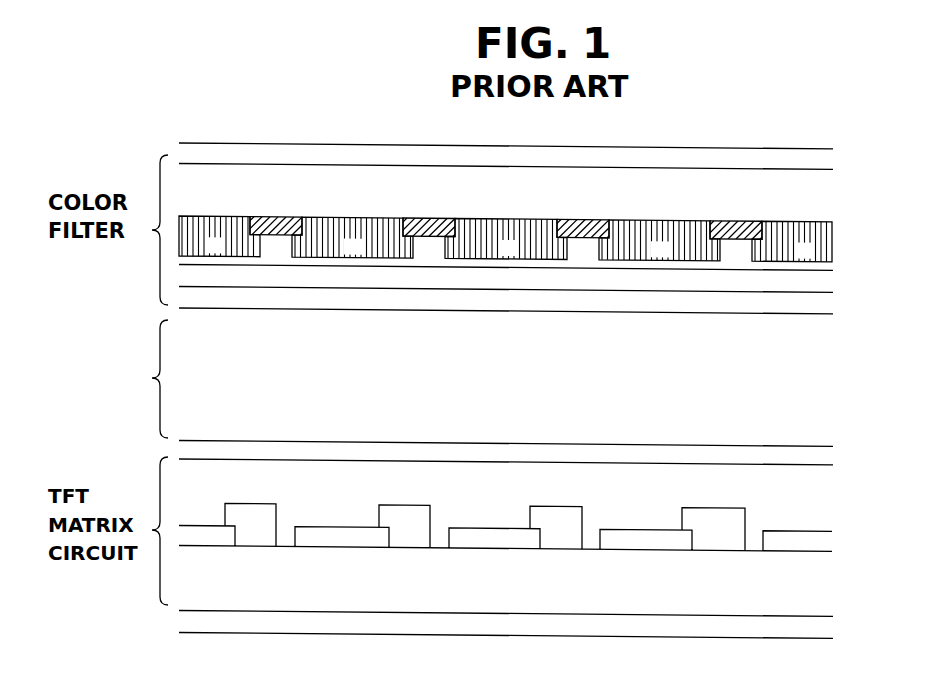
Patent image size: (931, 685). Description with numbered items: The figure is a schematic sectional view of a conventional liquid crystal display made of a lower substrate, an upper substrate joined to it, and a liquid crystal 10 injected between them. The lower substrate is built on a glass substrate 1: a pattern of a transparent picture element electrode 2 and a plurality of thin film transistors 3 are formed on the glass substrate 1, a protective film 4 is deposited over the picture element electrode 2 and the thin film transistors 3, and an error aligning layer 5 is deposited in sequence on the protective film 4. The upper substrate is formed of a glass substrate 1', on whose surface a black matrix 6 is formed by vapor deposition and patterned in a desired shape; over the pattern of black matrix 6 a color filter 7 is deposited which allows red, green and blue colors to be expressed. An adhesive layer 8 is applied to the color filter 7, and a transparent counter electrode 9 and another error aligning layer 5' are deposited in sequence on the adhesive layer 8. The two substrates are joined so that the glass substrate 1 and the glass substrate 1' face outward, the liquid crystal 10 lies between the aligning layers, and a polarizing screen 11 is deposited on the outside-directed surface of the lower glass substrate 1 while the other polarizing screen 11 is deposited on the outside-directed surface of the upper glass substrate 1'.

The polarizing screen 11 is at (823, 164).
The glass substrate 1' is at (535, 178).
The black matrix 6 is at (748, 222).
The color filter 7 is at (831, 246).
The adhesive layer 8 is at (820, 268).
The transparent counter electrode 9 is at (820, 287).
The error aligning layer 5' is at (532, 322).
The liquid crystal 10 is at (808, 380).
The error aligning layer 5 is at (528, 438).
The protective film 4 is at (818, 478).
The thin film transistor 3 is at (745, 508).
The transparent picture element electrode 2 is at (814, 543).
The glass substrate 1 is at (529, 581).